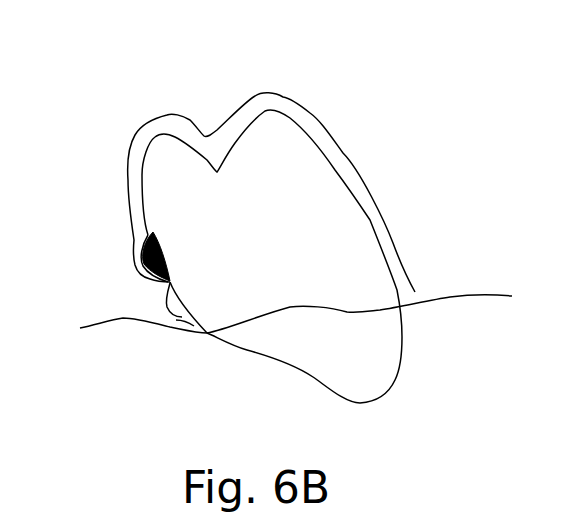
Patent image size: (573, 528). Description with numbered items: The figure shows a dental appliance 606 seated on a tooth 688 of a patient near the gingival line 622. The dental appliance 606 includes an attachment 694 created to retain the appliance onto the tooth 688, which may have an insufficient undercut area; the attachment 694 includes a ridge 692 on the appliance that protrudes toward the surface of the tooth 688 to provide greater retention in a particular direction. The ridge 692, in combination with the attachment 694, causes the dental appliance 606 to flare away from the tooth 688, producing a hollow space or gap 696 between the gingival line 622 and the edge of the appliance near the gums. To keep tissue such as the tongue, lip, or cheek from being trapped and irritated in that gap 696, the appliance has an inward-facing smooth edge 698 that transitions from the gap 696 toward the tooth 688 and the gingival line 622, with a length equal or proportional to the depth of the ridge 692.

The tooth 688 is at (88, 52).
The dental appliance 606 is at (310, 113).
The ridge 692 is at (126, 270).
The attachment 694 is at (166, 235).
The gap 696 is at (159, 294).
The inward-facing smooth edge 698 is at (184, 330).
The gingival line 622 is at (462, 280).